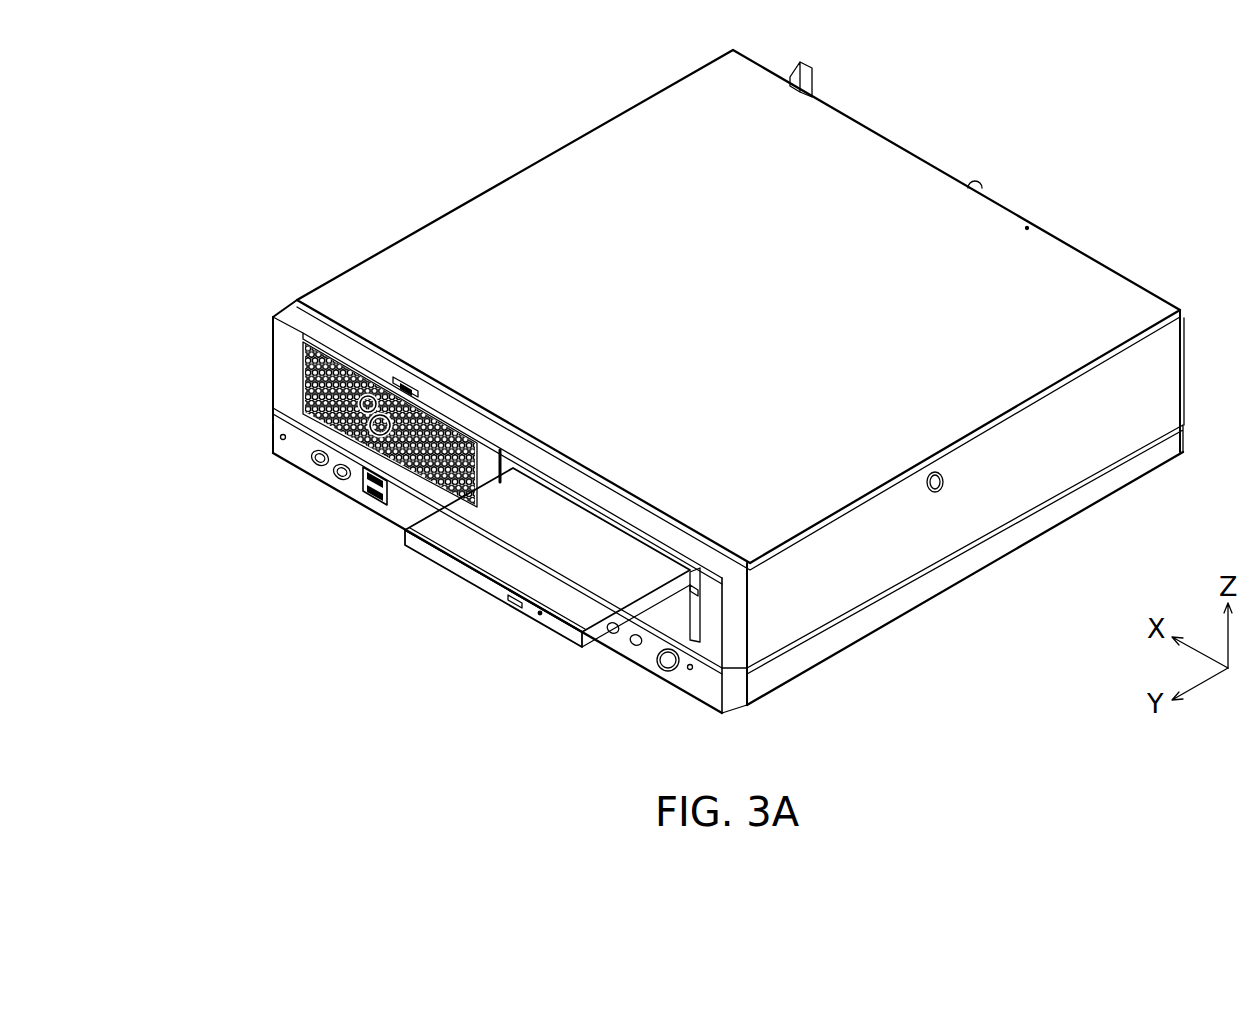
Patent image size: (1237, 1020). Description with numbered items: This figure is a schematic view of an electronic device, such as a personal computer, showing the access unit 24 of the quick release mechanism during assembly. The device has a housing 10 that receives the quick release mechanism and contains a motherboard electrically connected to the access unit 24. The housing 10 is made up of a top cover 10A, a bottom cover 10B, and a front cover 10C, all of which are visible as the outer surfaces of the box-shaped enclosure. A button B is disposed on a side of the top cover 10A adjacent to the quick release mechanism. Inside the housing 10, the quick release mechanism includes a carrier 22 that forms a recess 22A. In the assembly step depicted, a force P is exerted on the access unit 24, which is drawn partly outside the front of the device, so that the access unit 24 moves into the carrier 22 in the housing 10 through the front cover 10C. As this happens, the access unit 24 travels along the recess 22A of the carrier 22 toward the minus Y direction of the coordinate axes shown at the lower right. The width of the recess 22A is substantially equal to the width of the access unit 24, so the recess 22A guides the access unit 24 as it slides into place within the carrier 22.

The housing 10 is at (710, 381).
The top cover 10A is at (478, 230).
The bottom cover 10B is at (862, 623).
The front cover 10C is at (275, 370).
The carrier 22 is at (628, 669).
The recess 22A is at (693, 590).
The access unit 24 is at (472, 535).
The button B is at (948, 492).
The force P is at (468, 608).